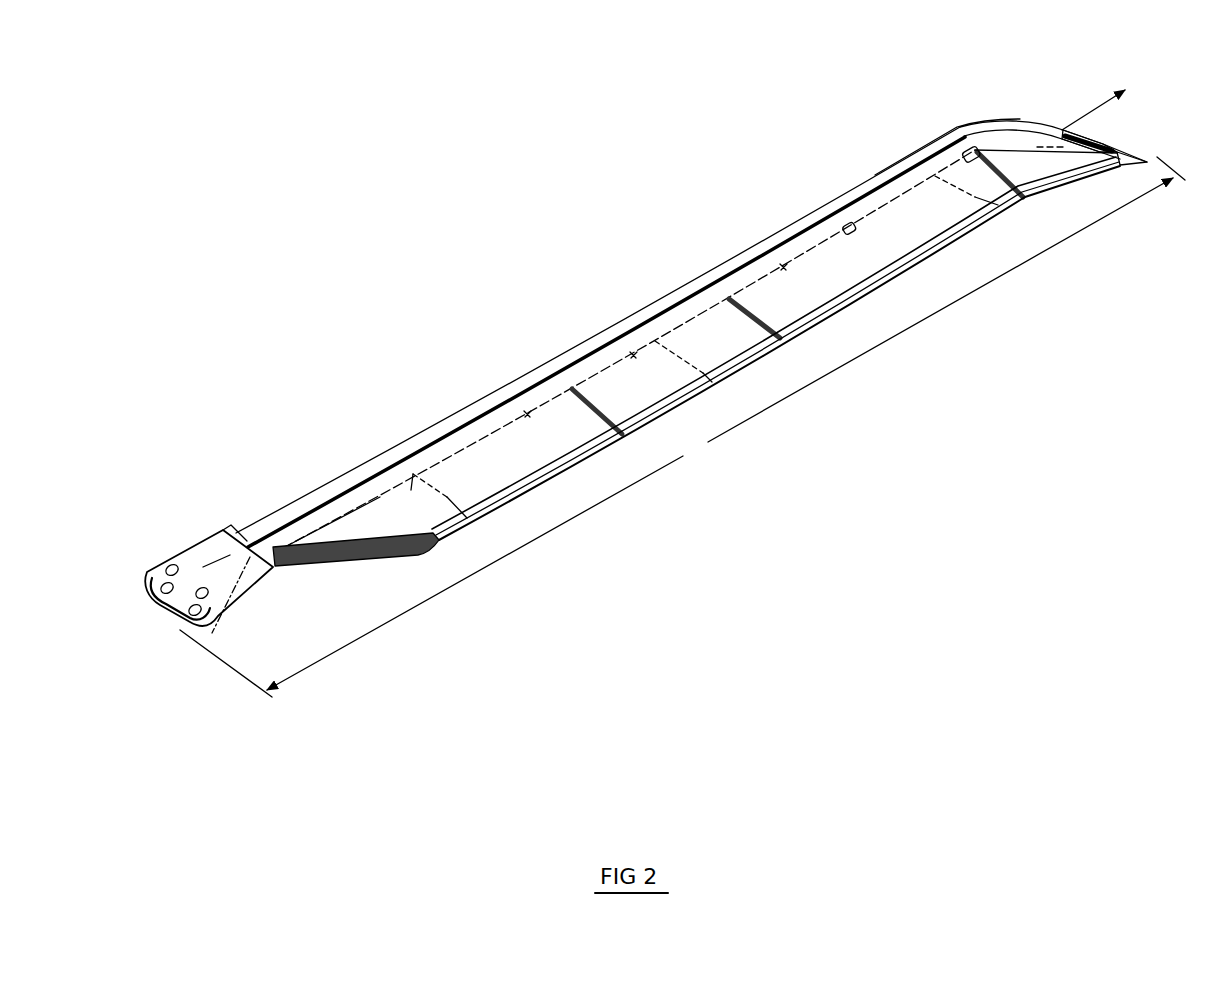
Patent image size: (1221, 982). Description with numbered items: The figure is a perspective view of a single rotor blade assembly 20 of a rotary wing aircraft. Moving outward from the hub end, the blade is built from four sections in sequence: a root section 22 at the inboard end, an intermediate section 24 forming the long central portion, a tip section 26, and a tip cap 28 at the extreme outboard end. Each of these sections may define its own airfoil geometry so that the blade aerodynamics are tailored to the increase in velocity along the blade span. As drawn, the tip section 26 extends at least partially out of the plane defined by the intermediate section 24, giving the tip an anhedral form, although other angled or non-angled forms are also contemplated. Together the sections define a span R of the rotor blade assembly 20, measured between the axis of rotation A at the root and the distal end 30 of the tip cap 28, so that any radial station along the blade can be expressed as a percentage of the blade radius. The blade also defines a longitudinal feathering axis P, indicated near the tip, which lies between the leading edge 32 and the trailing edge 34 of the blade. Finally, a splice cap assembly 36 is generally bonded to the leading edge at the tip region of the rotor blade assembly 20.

The rotor blade assembly 20 is at (628, 257).
The root section 22 is at (263, 508).
The intermediate section 24 is at (603, 321).
The tip section 26 is at (957, 127).
The tip cap 28 is at (1106, 140).
The distal end 30 is at (1143, 160).
The leading edge 32 is at (705, 273).
The trailing edge 34 is at (754, 360).
The splice cap assembly 36 is at (1010, 125).
The axis of rotation A is at (252, 600).
The longitudinal feathering axis P is at (1088, 108).
The span R is at (682, 427).